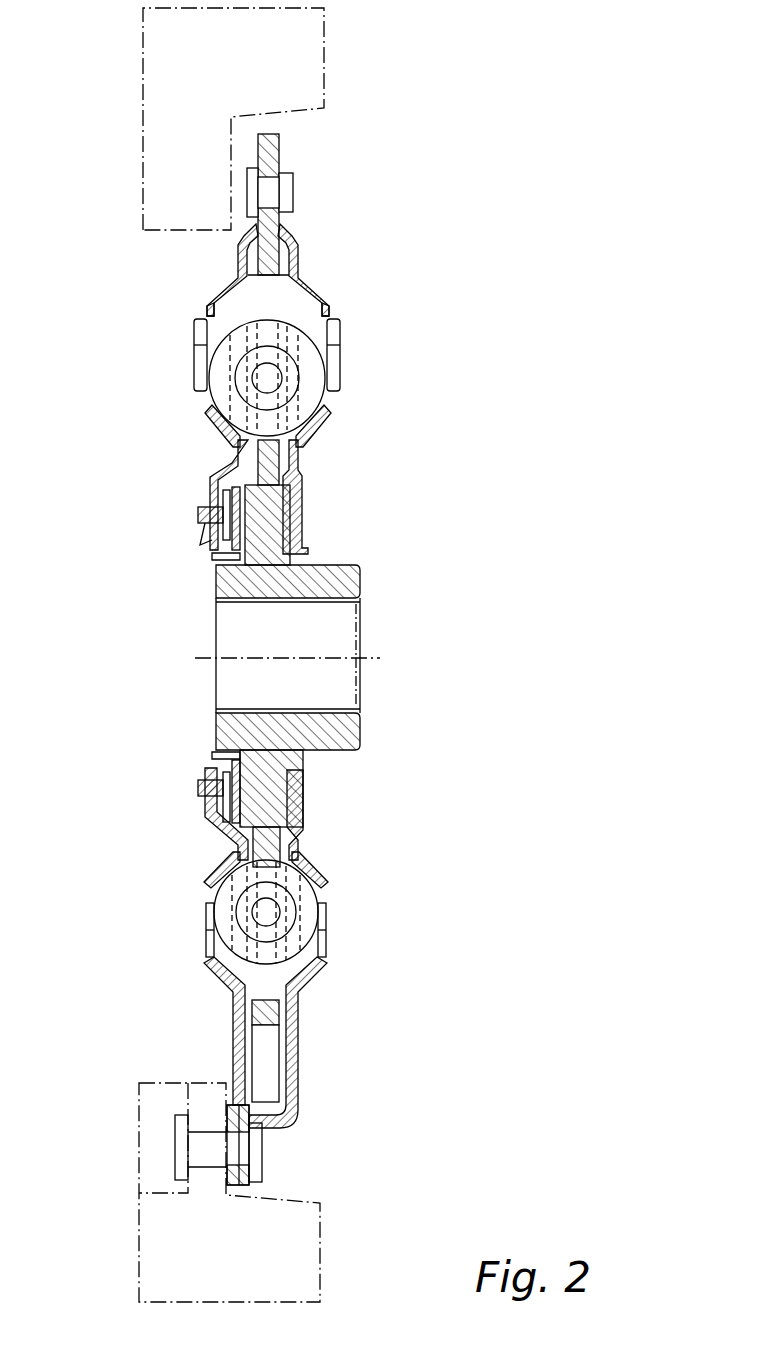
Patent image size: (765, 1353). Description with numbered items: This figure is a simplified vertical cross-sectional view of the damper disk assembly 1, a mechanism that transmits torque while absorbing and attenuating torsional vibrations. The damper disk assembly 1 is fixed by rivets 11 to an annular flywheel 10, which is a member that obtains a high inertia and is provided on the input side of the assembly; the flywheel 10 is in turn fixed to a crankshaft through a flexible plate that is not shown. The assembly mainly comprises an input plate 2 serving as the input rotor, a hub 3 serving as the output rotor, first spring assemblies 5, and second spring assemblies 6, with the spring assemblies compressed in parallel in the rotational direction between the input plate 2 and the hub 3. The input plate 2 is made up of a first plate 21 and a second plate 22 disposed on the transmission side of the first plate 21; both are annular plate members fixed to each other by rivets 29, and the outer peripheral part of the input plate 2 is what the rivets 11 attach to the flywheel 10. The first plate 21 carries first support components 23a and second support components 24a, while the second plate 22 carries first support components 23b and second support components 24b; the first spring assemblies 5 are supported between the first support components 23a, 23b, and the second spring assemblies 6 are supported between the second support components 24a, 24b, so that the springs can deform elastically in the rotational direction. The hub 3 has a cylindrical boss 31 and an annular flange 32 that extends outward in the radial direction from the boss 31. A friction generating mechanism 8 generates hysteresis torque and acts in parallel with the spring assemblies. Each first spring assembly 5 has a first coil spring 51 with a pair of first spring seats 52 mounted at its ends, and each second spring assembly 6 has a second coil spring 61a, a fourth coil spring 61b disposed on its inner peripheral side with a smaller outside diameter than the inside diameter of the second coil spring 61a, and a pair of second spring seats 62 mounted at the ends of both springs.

The damper disk assembly 1 is at (410, 176).
The input plate 2 is at (292, 156).
The hub 3 is at (309, 684).
The first spring assembly 5 is at (272, 916).
The second spring assembly 6 is at (275, 348).
The friction generating mechanism 8 is at (309, 468).
The flywheel 10 is at (122, 50).
The rivet 11 is at (255, 1153).
The first plate 21 is at (236, 240).
The second plate 22 is at (303, 240).
The first support component 23a is at (220, 990).
The first support component 23b is at (318, 985).
The second support component 24a is at (208, 292).
The second support component 24b is at (322, 292).
The rivet 29 is at (271, 188).
The boss 31 is at (346, 585).
The flange 32 is at (243, 470).
The first coil spring 51 is at (303, 900).
The first spring seat 52 is at (204, 937).
The second coil spring 61a is at (312, 365).
The fourth coil spring 61b is at (286, 383).
The second spring seat 62 is at (196, 318).